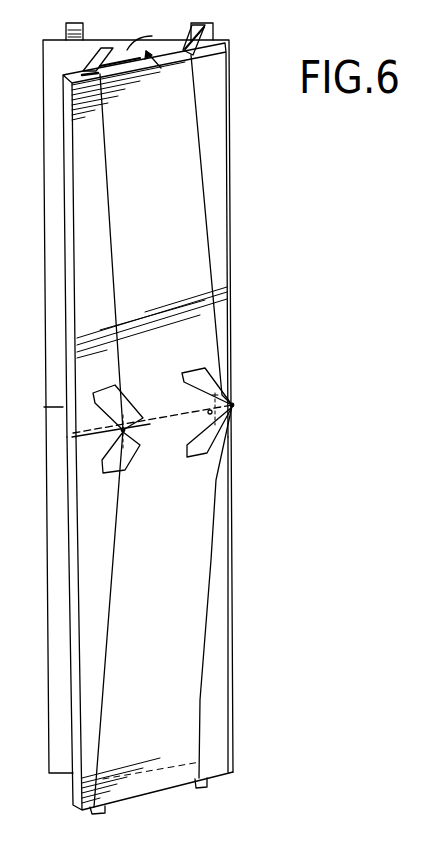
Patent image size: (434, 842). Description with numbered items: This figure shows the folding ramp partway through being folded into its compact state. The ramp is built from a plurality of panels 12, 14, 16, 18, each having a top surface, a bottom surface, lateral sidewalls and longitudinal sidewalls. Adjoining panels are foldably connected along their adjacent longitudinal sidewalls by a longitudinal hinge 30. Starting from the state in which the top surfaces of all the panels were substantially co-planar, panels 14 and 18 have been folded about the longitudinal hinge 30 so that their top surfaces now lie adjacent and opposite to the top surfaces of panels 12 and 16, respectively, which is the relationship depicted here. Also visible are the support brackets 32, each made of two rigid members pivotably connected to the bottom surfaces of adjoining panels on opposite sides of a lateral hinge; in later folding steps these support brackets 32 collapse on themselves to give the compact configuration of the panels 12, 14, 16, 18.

The panel 12 is at (214, 37).
The panel 14 is at (163, 266).
The panel 16 is at (60, 590).
The panel 18 is at (164, 600).
The longitudinal hinge 30 is at (73, 68).
The support bracket 32 is at (130, 443).